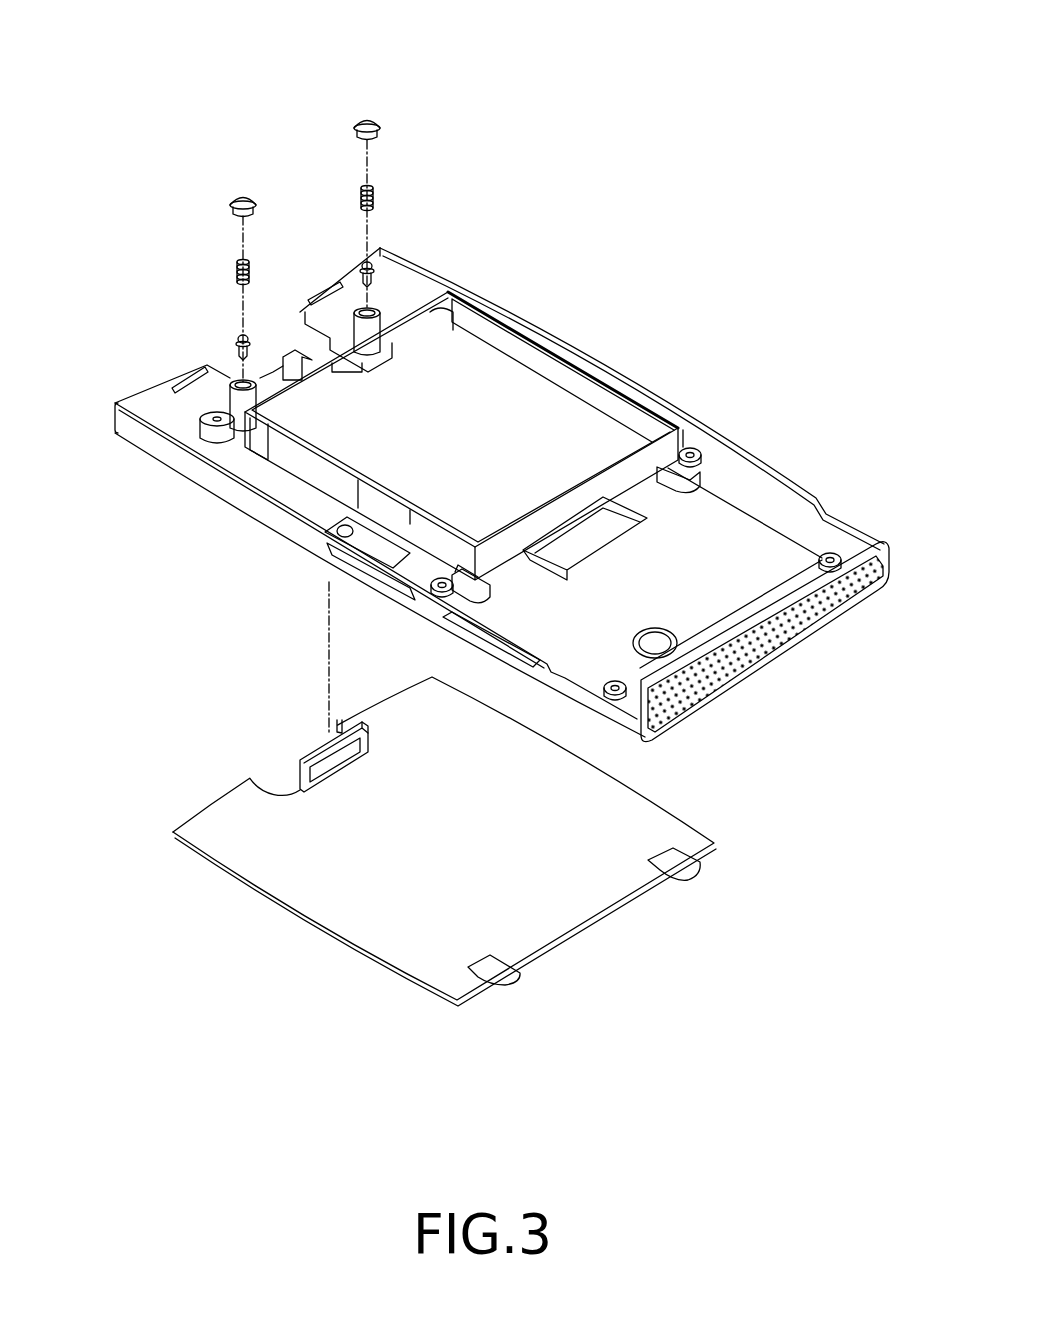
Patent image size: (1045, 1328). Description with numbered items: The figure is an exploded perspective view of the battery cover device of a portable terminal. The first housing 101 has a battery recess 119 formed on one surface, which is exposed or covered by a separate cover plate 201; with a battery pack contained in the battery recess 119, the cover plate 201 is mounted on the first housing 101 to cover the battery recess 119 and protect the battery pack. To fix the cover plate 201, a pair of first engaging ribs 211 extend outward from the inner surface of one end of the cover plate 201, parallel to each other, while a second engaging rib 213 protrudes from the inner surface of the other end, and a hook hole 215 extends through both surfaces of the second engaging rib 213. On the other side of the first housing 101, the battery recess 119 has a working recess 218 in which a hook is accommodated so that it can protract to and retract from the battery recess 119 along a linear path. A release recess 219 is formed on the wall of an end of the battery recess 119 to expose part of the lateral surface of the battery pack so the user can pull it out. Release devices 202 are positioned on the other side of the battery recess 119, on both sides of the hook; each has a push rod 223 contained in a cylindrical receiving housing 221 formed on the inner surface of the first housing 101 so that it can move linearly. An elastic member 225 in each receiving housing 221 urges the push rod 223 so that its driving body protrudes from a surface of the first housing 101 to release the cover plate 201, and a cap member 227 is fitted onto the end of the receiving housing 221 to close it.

The first housing 101 is at (768, 447).
The battery recess 119 is at (555, 410).
The cover plate 201 is at (570, 918).
The release device 202 is at (262, 390).
The first engaging rib 211 is at (518, 982).
The second engaging rib 213 is at (320, 753).
The hook hole 215 is at (327, 762).
The working recess 218 is at (318, 392).
The release recess 219 is at (445, 322).
The receiving housing 221 is at (232, 414).
The push rod 223 is at (232, 341).
The elastic member 225 is at (233, 272).
The cap member 227 is at (243, 194).